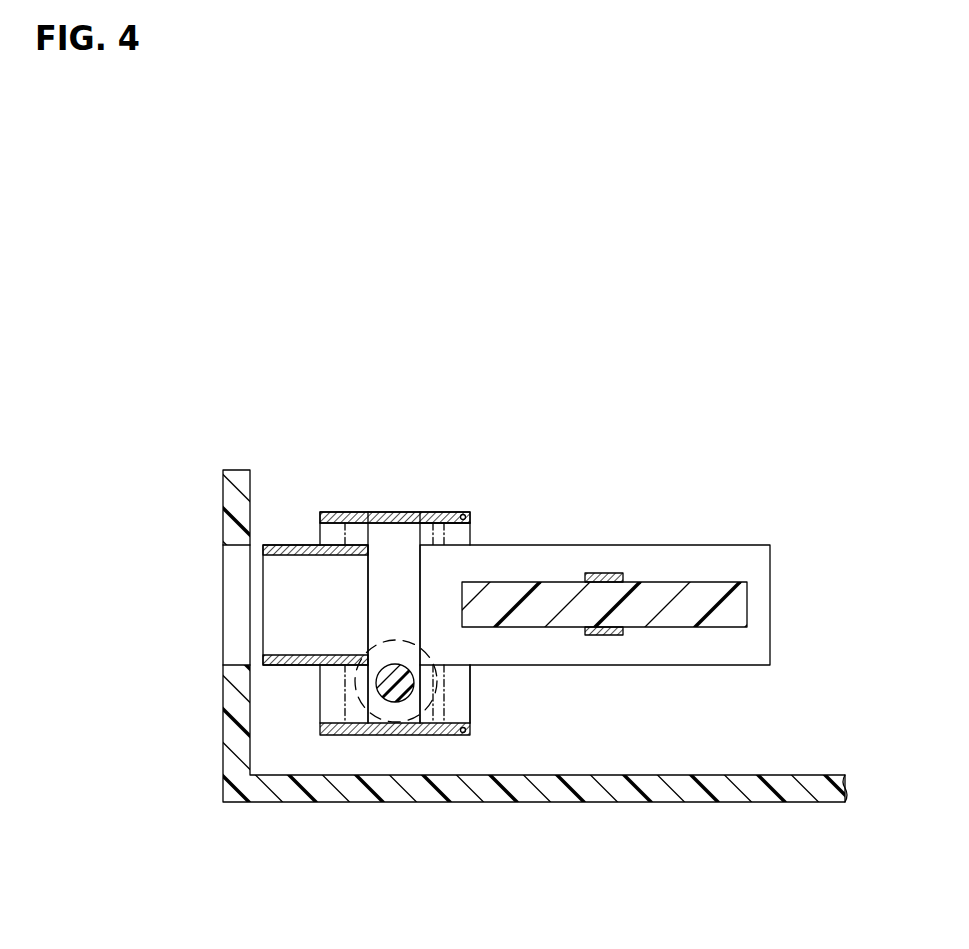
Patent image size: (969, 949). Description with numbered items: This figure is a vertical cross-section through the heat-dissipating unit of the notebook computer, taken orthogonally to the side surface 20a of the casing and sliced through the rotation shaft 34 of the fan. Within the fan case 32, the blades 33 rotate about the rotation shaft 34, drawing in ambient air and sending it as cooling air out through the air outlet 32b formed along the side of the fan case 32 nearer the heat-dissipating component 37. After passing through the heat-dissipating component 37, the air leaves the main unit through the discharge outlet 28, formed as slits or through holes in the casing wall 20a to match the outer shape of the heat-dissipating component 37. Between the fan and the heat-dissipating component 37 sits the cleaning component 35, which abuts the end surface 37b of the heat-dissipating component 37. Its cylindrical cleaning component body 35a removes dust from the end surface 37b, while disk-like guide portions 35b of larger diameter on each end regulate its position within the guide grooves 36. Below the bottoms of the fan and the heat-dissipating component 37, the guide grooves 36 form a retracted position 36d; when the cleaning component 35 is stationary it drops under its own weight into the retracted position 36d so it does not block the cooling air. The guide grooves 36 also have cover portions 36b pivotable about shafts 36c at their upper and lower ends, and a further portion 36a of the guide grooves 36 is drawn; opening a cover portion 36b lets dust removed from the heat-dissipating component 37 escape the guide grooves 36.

The casing side surface 20a is at (228, 740).
The discharge outlet 28 is at (194, 627).
The fan case 32 is at (710, 546).
The air outlet 32b is at (420, 585).
The blades 33 is at (727, 605).
The rotation shaft 34 is at (602, 573).
The cleaning component 35 is at (343, 887).
The cleaning component body 35a is at (396, 702).
The guide portions 35b is at (373, 737).
The guide grooves 36 is at (373, 410).
The bracket upper plate 36a is at (431, 510).
The cover portions 36b is at (407, 510).
The shafts 36c is at (465, 514).
The retracted position 36d is at (480, 665).
The heat-dissipating component 37 is at (291, 545).
The end surface 37b is at (378, 607).